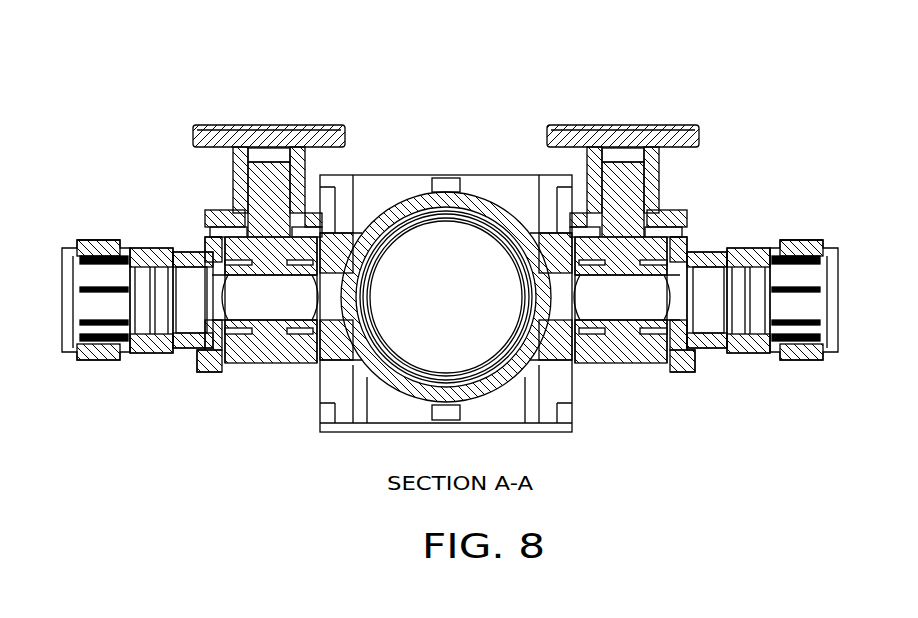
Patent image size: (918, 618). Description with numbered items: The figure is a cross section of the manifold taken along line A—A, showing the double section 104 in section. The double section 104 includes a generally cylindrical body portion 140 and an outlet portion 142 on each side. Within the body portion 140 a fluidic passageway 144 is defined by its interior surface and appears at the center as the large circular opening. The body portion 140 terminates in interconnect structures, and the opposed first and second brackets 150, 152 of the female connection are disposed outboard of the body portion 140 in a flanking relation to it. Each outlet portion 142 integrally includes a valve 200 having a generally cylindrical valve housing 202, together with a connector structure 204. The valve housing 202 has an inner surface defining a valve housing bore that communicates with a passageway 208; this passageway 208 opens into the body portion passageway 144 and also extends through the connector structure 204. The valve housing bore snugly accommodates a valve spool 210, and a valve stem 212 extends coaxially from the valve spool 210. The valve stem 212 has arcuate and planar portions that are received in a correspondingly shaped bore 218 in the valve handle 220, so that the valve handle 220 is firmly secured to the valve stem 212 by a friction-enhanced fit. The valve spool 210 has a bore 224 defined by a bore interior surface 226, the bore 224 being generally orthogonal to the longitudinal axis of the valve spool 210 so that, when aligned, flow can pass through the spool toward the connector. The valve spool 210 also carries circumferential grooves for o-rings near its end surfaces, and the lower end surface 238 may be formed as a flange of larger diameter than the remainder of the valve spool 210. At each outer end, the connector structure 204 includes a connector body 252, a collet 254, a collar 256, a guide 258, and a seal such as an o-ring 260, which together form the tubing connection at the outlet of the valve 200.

The double section 104 is at (268, 125).
The body portion 140 is at (488, 197).
The outlet portion 142 is at (207, 240).
The fluidic passageway 144 is at (405, 247).
The first bracket 150 is at (525, 200).
The second bracket 152 is at (513, 432).
The valve 200 is at (258, 378).
The valve housing 202 is at (203, 362).
The connector structure 204 is at (132, 240).
The passageway 208 is at (257, 375).
The valve spool 210 is at (230, 375).
The valve stem 212 is at (248, 190).
The bore 218 is at (285, 180).
The valve handle 220 is at (313, 125).
The bore 224 is at (446, 379).
The bore interior surface 226 is at (274, 303).
The lower end surface 238 is at (247, 375).
The connector body 252 is at (160, 246).
The collet 254 is at (60, 360).
The collar 256 is at (82, 365).
The guide 258 is at (133, 362).
The o-ring 260 is at (162, 362).